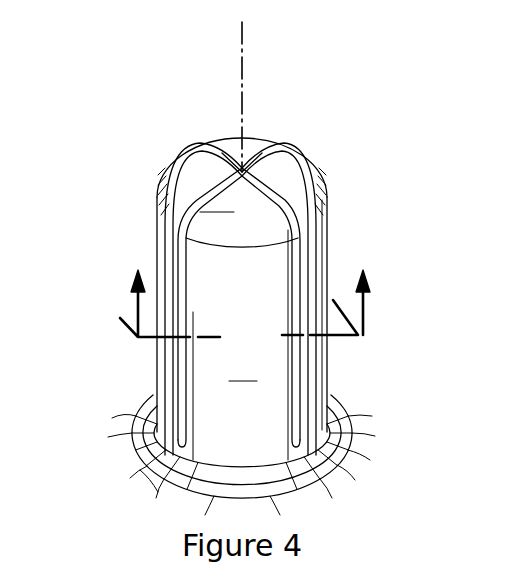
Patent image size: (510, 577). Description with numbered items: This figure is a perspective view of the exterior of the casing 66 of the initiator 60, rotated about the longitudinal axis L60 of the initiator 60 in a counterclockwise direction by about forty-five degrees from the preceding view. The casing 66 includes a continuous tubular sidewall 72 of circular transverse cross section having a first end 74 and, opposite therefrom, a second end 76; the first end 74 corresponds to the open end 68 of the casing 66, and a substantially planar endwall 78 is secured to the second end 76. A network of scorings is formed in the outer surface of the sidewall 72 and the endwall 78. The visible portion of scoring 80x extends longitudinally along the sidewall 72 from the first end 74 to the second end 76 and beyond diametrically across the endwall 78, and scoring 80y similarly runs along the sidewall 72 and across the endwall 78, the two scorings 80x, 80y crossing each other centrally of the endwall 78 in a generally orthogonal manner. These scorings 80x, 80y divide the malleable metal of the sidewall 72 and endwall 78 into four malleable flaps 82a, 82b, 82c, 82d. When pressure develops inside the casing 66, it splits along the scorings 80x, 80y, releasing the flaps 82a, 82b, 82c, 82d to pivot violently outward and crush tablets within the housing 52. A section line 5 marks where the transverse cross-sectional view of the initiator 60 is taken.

The initiator 60 is at (262, 275).
The longitudinal axis L60 is at (246, 30).
The casing 66 is at (321, 248).
The endwall 78 is at (313, 147).
The tubular sidewall 72 is at (328, 198).
The second end 76 is at (157, 237).
The first end 74 is at (125, 452).
The open end 68 is at (343, 455).
The housing 52 is at (154, 492).
The malleable flap 82a is at (234, 212).
The malleable flap 82b is at (308, 148).
The malleable flap 82c is at (232, 138).
The malleable flap 82d is at (158, 171).
The scoring 80x is at (209, 141).
The scoring 80y is at (262, 138).
The section line 5 is at (250, 303).